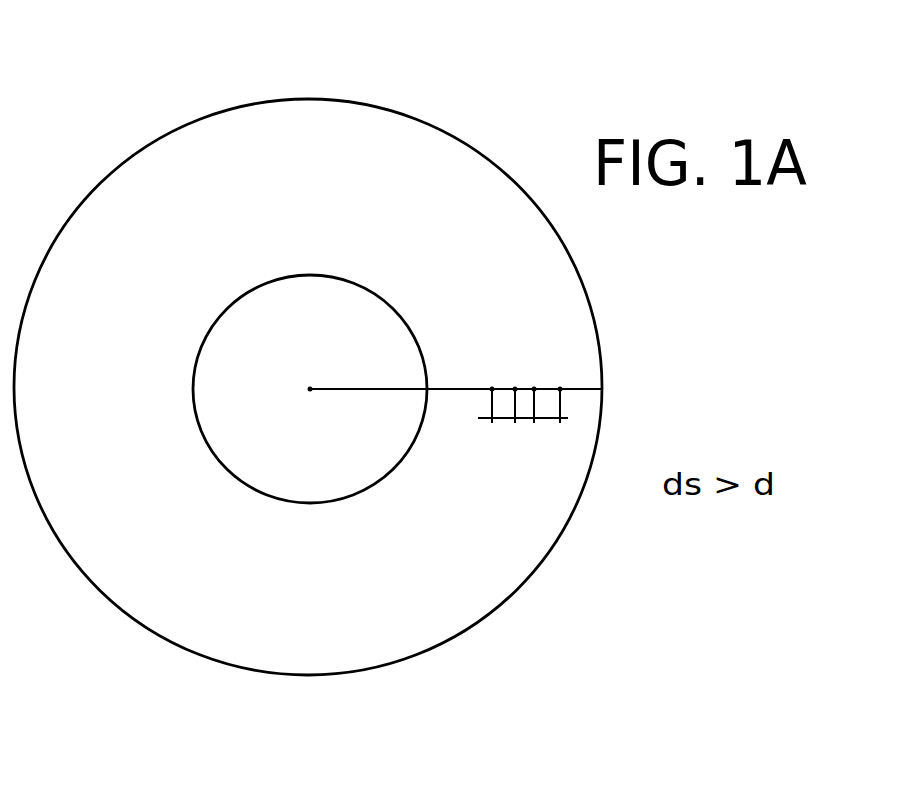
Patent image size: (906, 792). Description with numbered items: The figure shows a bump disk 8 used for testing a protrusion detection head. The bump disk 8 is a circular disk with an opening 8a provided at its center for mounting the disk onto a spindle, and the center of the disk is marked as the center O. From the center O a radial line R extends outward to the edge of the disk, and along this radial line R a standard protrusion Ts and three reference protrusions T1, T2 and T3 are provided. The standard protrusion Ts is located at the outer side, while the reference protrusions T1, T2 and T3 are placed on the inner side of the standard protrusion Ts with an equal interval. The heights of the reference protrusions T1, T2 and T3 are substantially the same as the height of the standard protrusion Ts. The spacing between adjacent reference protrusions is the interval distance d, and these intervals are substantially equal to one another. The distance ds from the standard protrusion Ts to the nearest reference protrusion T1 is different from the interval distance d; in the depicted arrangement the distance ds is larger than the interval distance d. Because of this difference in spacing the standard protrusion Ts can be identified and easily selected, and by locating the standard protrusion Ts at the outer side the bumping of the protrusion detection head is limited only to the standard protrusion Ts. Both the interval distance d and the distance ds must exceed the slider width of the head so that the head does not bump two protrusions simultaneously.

The bump disk 8 is at (230, 132).
The opening 8a is at (348, 284).
The center O is at (310, 408).
The radial line R is at (450, 389).
The reference protrusion T1 is at (534, 389).
The reference protrusion T2 is at (515, 389).
The reference protrusion T3 is at (492, 389).
The standard protrusion Ts is at (560, 388).
The interval distance d is at (503, 422).
The distance from standard protrusion to nearest reference protrusion ds is at (547, 422).